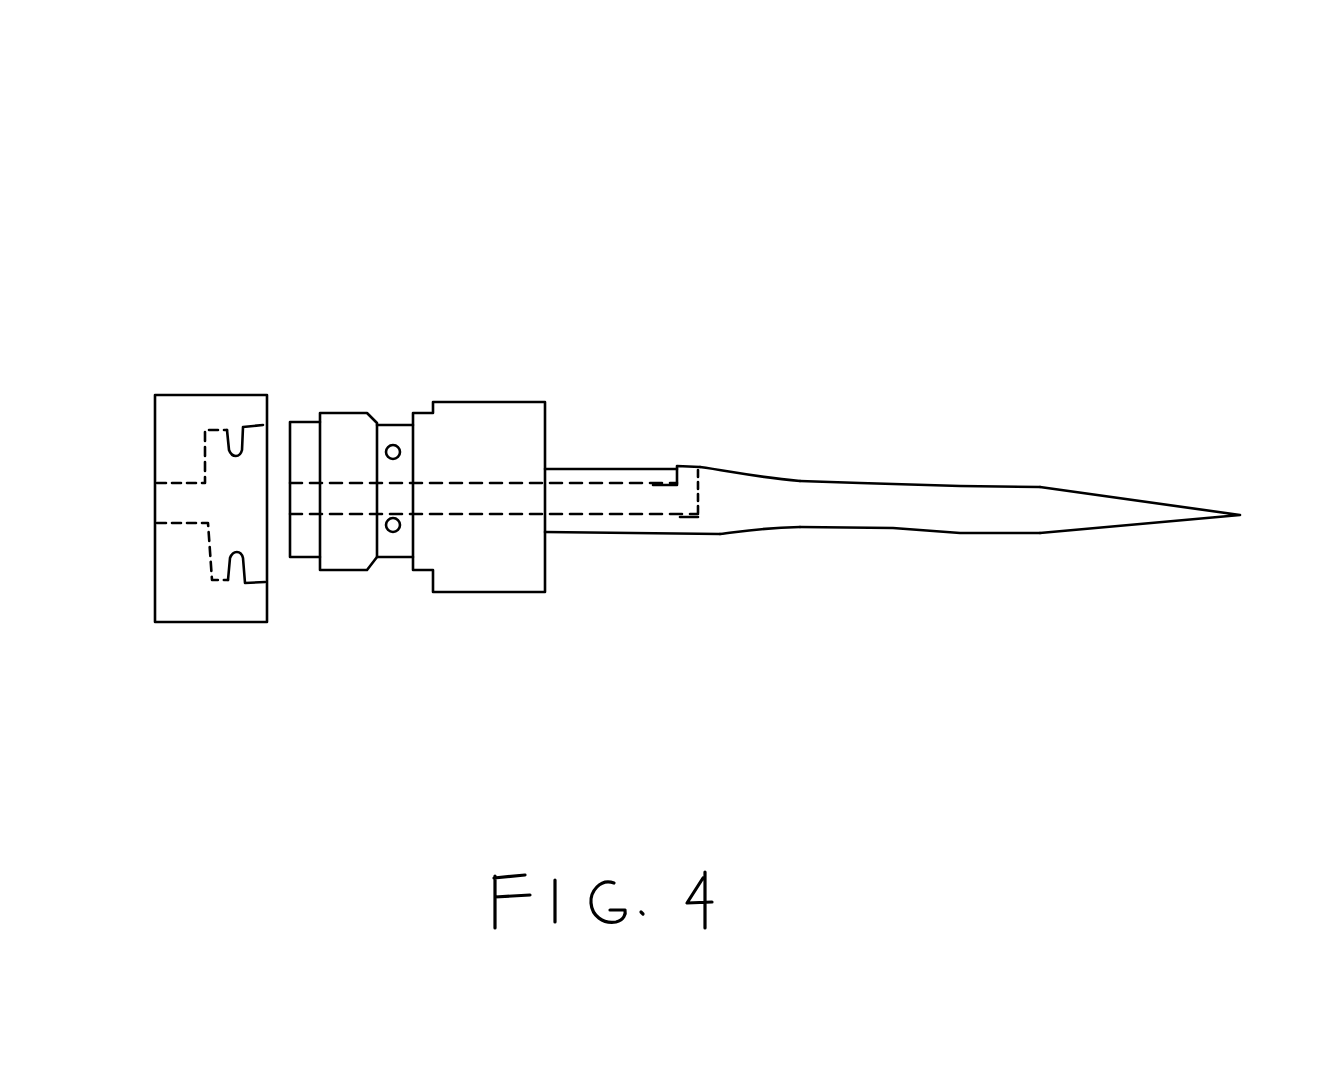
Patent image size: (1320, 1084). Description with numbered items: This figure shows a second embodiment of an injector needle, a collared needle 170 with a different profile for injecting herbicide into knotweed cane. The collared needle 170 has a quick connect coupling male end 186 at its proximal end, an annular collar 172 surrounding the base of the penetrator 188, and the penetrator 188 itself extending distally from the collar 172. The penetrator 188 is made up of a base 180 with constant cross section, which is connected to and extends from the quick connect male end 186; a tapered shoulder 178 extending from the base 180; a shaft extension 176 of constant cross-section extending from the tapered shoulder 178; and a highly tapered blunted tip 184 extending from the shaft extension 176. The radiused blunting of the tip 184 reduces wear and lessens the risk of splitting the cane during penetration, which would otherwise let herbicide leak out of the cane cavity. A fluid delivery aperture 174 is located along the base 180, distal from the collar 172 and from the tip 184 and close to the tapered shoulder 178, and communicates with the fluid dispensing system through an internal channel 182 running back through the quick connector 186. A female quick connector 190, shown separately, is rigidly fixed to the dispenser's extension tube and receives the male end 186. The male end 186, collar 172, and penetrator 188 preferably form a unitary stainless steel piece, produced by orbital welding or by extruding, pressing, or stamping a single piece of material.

The collared needle 170 is at (730, 148).
The annular collar 172 is at (477, 388).
The fluid delivery aperture 174 is at (683, 462).
The shaft extension 176 is at (913, 467).
The tapered shoulder 178 is at (747, 465).
The base 180 is at (592, 460).
The channel 182 is at (592, 487).
The highly tapered blunted tip 184 is at (1065, 450).
The quick connect coupling male end 186 is at (335, 397).
The penetrator 188 is at (1265, 605).
The female quick connector 190 is at (180, 375).